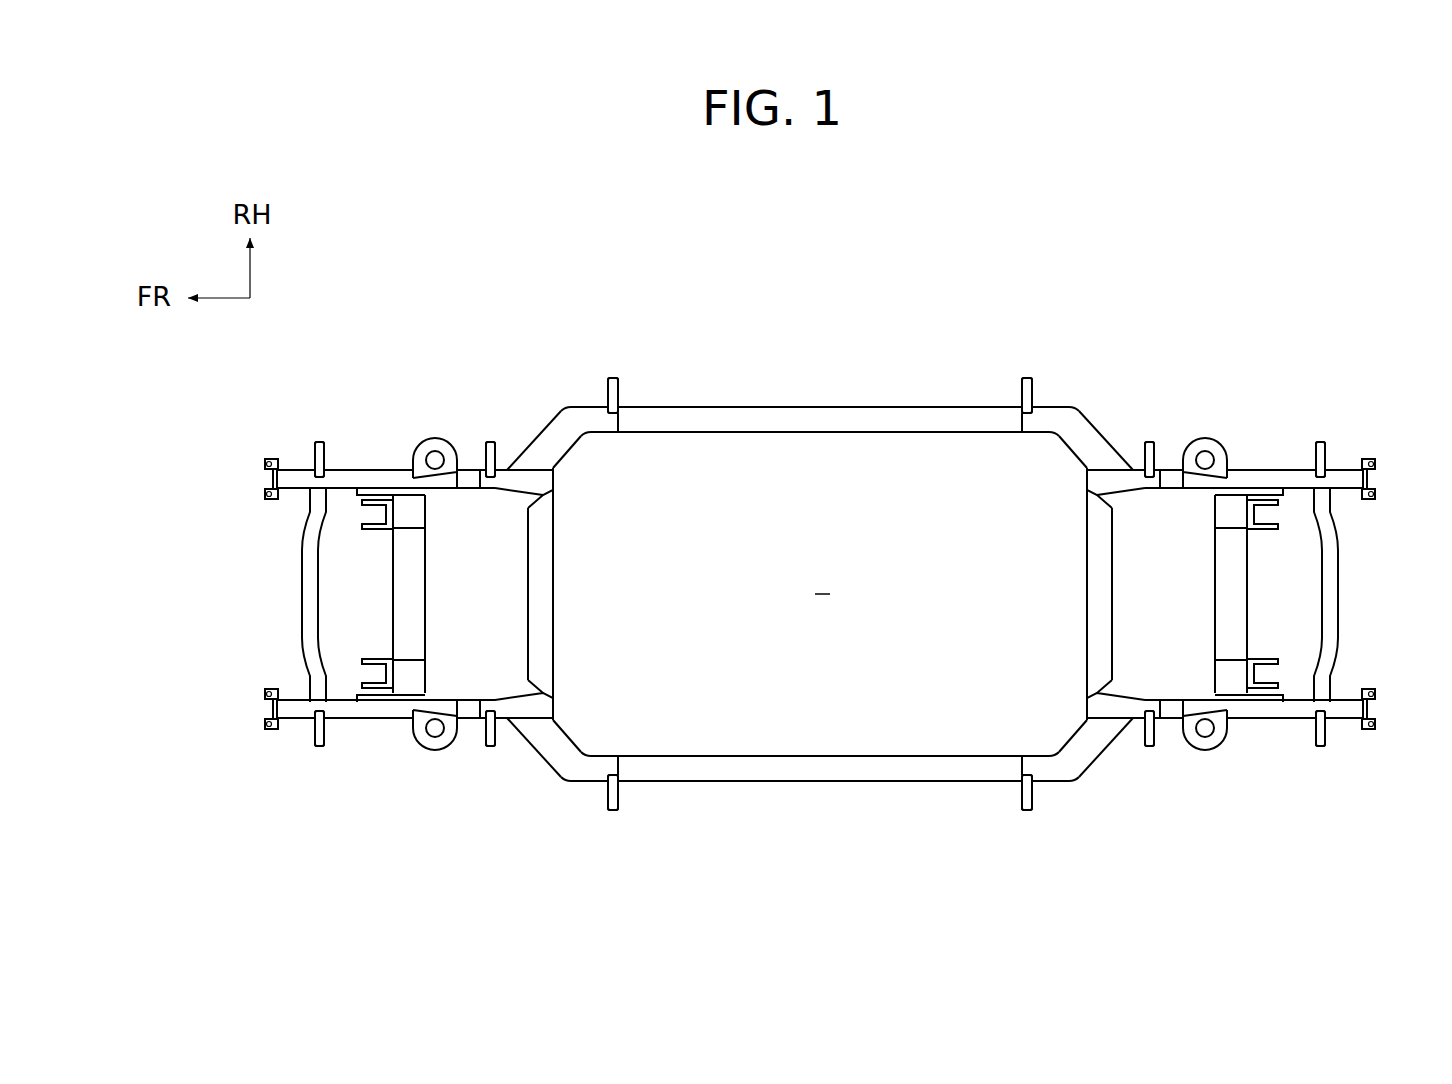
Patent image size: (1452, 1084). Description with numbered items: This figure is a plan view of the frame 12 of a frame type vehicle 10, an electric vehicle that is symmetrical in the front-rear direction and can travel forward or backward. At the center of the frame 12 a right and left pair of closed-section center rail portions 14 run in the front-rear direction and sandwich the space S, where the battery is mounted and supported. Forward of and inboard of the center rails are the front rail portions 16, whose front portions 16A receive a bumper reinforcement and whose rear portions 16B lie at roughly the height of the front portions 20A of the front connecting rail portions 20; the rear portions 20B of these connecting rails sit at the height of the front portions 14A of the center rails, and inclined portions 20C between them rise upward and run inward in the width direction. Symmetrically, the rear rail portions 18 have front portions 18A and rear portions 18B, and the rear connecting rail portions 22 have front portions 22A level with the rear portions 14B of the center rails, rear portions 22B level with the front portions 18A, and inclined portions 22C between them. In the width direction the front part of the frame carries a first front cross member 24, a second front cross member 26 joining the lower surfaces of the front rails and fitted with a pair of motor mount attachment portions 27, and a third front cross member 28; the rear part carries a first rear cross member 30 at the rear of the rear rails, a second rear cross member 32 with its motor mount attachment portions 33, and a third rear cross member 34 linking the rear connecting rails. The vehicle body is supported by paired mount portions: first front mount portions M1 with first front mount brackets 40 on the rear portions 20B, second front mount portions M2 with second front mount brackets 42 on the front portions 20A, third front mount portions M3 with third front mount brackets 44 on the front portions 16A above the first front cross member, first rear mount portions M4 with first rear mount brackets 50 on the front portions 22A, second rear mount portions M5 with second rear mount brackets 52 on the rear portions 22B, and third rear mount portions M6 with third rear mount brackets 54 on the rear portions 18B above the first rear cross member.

The vehicle 10 is at (1283, 266).
The frame 12 is at (1184, 308).
The center rail portions 14 is at (851, 403).
The front portions of the center rail portions 14A is at (626, 406).
The rear portions of the center rail portions 14B is at (1008, 404).
The front rail portions 16 is at (349, 465).
The front portions of the front rail portions 16A is at (290, 462).
The rear portions of the front rail portions 16B is at (448, 441).
The rear rail portions 18 is at (1265, 467).
The front portions of the rear rail portions 18A is at (1209, 441).
The rear portions of the rear rail portions 18B is at (1373, 463).
The front connecting rail portions 20 is at (538, 424).
The front portions of the front connecting rail portions 20A is at (490, 497).
The rear portions of the front connecting rail portions 20B is at (605, 437).
The inclined portions 20C is at (572, 456).
The rear connecting rail portions 22 is at (1064, 400).
The front portions of the rear connecting rail portions 22A is at (1052, 437).
The rear portions of the rear connecting rail portions 22B is at (1152, 497).
The inclined portions 22C is at (1073, 456).
The first front cross member 24 is at (301, 579).
The second front cross member 26 is at (393, 597).
The motor mount attachment portions 27 is at (373, 524).
The third front cross member 28 is at (556, 590).
The first rear cross member 30 is at (1340, 580).
The second rear cross member 32 is at (1248, 593).
The motor mount attachment portions 33 is at (1278, 524).
The third rear cross member 34 is at (1124, 586).
The first front mount bracket 40 is at (617, 392).
The second front mount bracket 42 is at (492, 440).
The third front mount bracket 44 is at (322, 441).
The first rear mount bracket 50 is at (1031, 390).
The second rear mount bracket 52 is at (1153, 448).
The third rear mount bracket 54 is at (1329, 458).
The first front mount portions M1 is at (605, 372).
The second front mount portions M2 is at (484, 440).
The third front mount portions M3 is at (315, 440).
The first rear mount portions M4 is at (1024, 366).
The second rear mount portions M5 is at (1144, 432).
The third rear mount portions M6 is at (1323, 440).
The space S is at (822, 583).